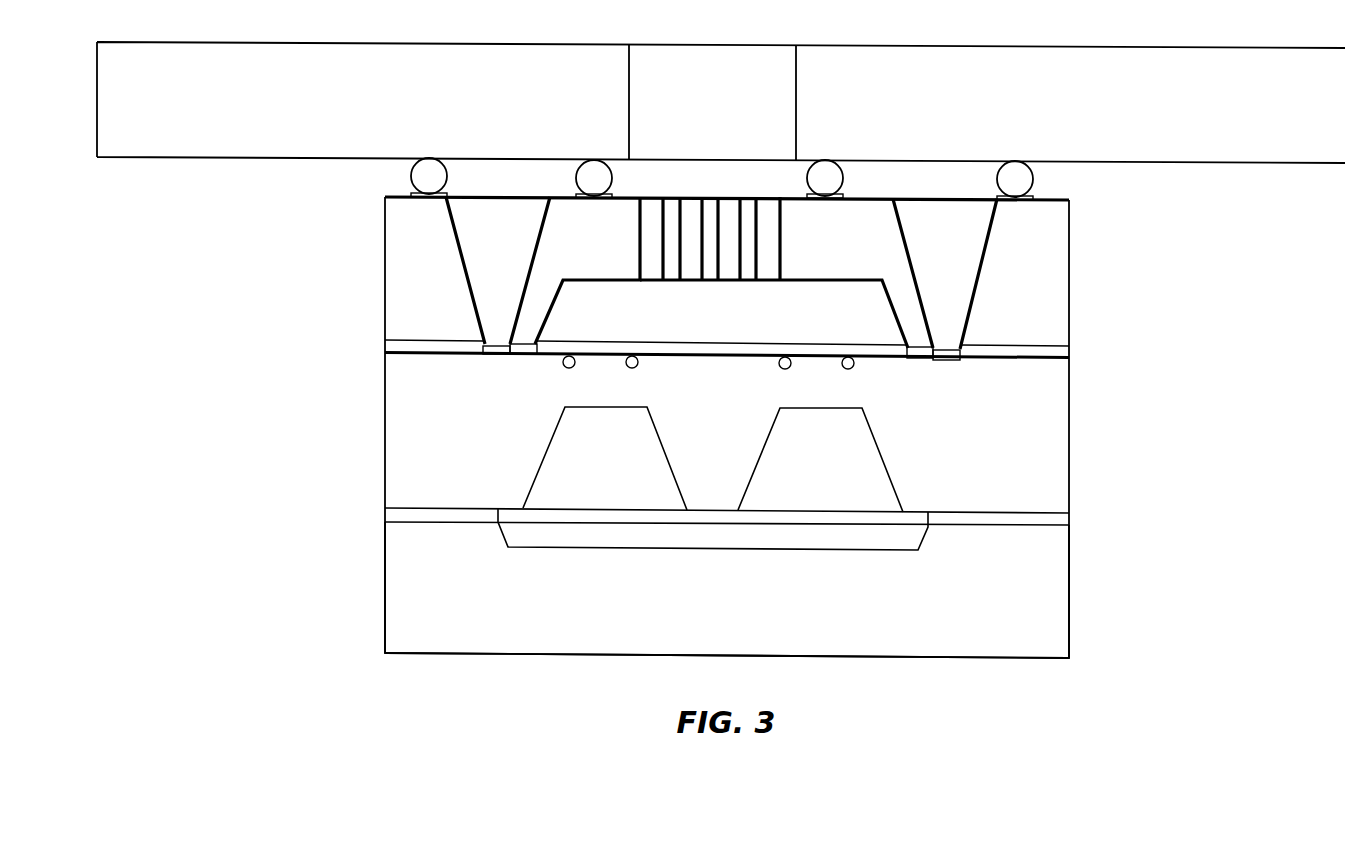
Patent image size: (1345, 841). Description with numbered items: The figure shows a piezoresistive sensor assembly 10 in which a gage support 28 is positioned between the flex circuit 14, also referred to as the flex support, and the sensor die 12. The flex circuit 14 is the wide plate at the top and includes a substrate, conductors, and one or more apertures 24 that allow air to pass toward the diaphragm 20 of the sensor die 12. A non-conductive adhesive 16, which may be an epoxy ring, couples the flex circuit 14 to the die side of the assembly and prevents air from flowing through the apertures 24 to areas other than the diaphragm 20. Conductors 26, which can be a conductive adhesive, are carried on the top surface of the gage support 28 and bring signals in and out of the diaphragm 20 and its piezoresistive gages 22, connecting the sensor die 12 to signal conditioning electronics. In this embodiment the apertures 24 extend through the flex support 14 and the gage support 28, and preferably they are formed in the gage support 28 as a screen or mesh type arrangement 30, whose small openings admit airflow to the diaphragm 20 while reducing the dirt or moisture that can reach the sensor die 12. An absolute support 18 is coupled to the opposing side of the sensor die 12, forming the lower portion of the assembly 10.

The piezoresistive sensor assembly 10 is at (1180, 440).
The sensor die 12 is at (1069, 445).
The flex circuit 14 is at (1258, 48).
The non-conductive adhesive 16 is at (825, 160).
The absolute support 18 is at (1069, 592).
The diaphragm 20 is at (605, 382).
The gages 22 is at (563, 362).
The apertures 24 is at (712, 70).
The conductors 26 is at (410, 174).
The gage support 28 is at (1069, 272).
The mesh arrangement 30 is at (670, 196).